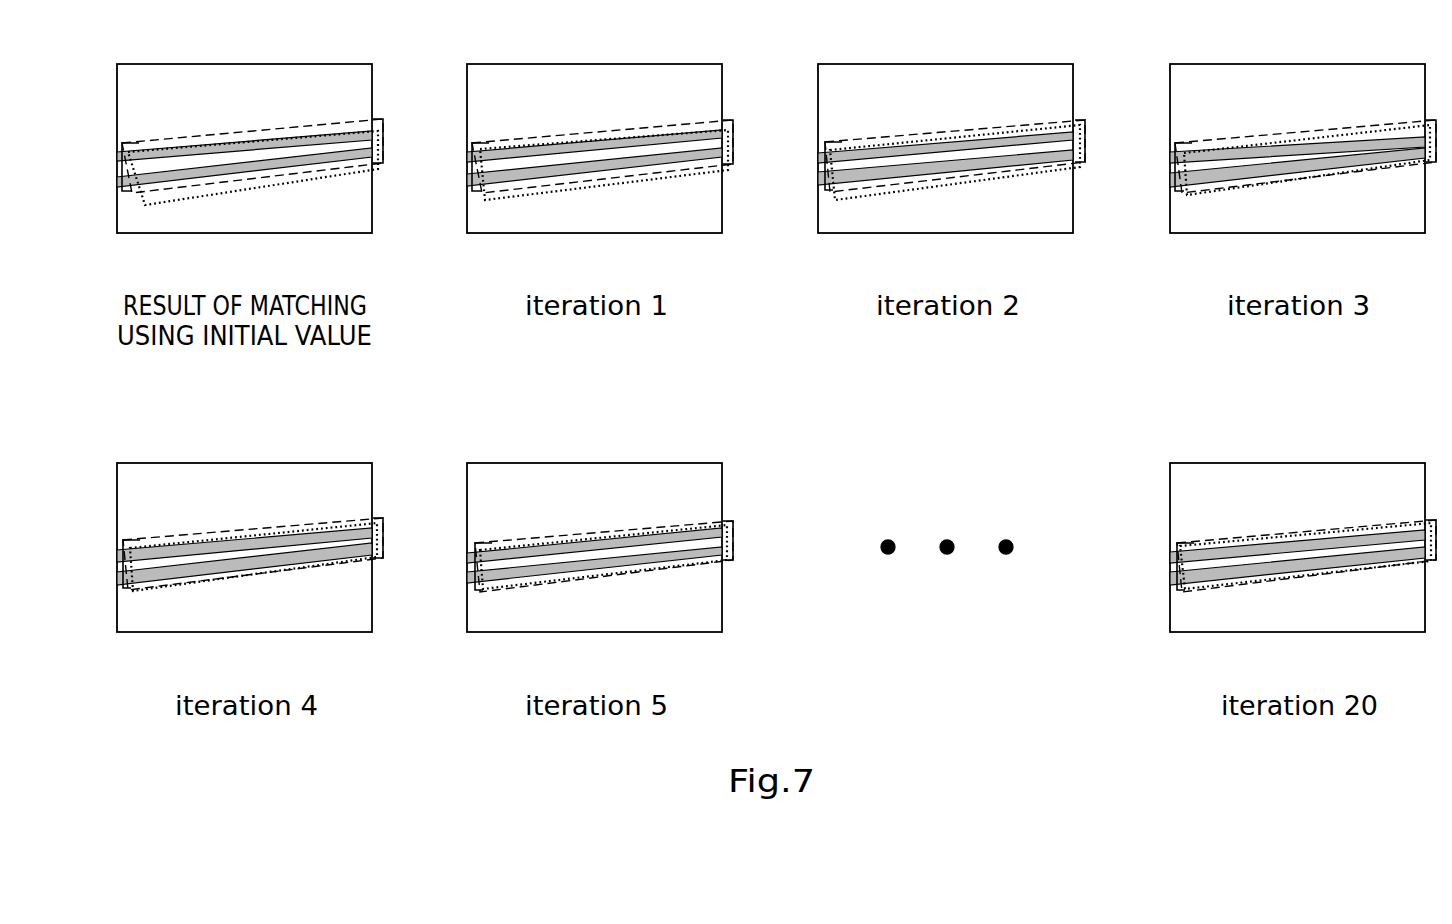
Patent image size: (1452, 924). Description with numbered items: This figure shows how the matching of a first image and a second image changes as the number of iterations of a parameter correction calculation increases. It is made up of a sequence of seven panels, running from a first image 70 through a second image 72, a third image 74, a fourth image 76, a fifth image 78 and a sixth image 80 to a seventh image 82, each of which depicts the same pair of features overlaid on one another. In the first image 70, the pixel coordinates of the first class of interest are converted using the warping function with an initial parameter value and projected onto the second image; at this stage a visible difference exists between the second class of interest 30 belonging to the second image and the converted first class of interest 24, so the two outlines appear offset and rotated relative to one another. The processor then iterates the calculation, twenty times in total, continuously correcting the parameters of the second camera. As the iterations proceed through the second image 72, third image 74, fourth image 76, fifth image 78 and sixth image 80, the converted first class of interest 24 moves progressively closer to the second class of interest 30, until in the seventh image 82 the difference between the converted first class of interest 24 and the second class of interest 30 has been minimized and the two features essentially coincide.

The first image 70 is at (242, 64).
The second image 72 is at (593, 64).
The third image 74 is at (944, 64).
The fourth image 76 is at (1296, 64).
The fifth image 78 is at (242, 463).
The sixth image 80 is at (593, 463).
The seventh image 82 is at (1296, 463).
The second class of interest 30 is at (751, 355).
The converted first class of interest 24 is at (774, 390).